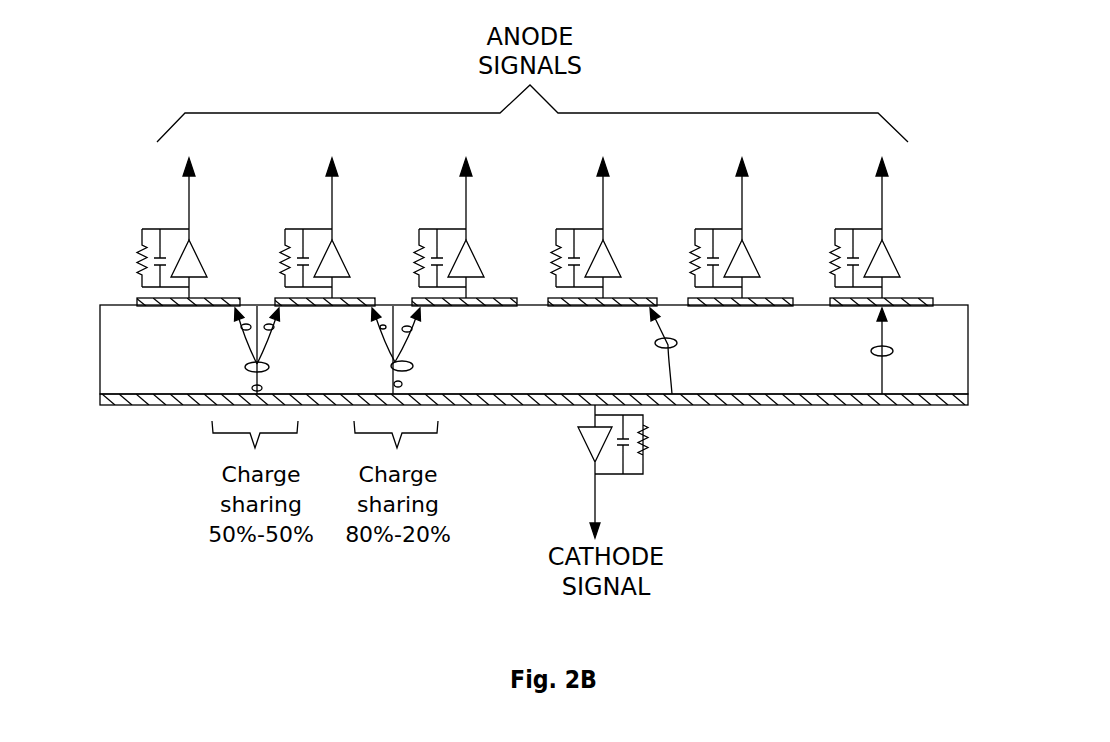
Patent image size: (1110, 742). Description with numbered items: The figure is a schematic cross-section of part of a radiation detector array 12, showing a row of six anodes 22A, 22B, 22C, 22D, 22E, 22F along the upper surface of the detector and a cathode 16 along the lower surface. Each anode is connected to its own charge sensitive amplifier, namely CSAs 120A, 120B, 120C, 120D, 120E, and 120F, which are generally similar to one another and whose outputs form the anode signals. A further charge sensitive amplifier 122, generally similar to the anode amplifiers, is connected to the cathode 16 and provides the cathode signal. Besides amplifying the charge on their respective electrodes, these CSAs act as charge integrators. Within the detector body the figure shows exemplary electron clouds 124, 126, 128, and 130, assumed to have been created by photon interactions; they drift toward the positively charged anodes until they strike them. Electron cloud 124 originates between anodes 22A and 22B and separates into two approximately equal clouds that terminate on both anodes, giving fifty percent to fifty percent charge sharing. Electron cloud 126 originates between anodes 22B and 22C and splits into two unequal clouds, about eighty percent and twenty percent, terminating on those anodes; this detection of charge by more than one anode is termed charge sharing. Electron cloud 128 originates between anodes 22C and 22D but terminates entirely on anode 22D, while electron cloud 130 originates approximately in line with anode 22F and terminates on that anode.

The array 12 is at (138, 447).
The cathode 16 is at (808, 405).
The anode 22A is at (138, 298).
The anode 22B is at (364, 298).
The anode 22C is at (500, 298).
The anode 22D is at (637, 298).
The anode 22E is at (776, 298).
The anode 22F is at (920, 298).
The charge sensitive amplifier 120A is at (197, 254).
The charge sensitive amplifier 120B is at (340, 254).
The charge sensitive amplifier 120C is at (474, 254).
The charge sensitive amplifier 120D is at (611, 254).
The charge sensitive amplifier 120E is at (750, 254).
The charge sensitive amplifier 120F is at (890, 254).
The charge sensitive amplifier 122 is at (583, 447).
The electron cloud 124 is at (246, 368).
The electron cloud 126 is at (414, 366).
The electron cloud 128 is at (677, 343).
The electron cloud 130 is at (871, 351).